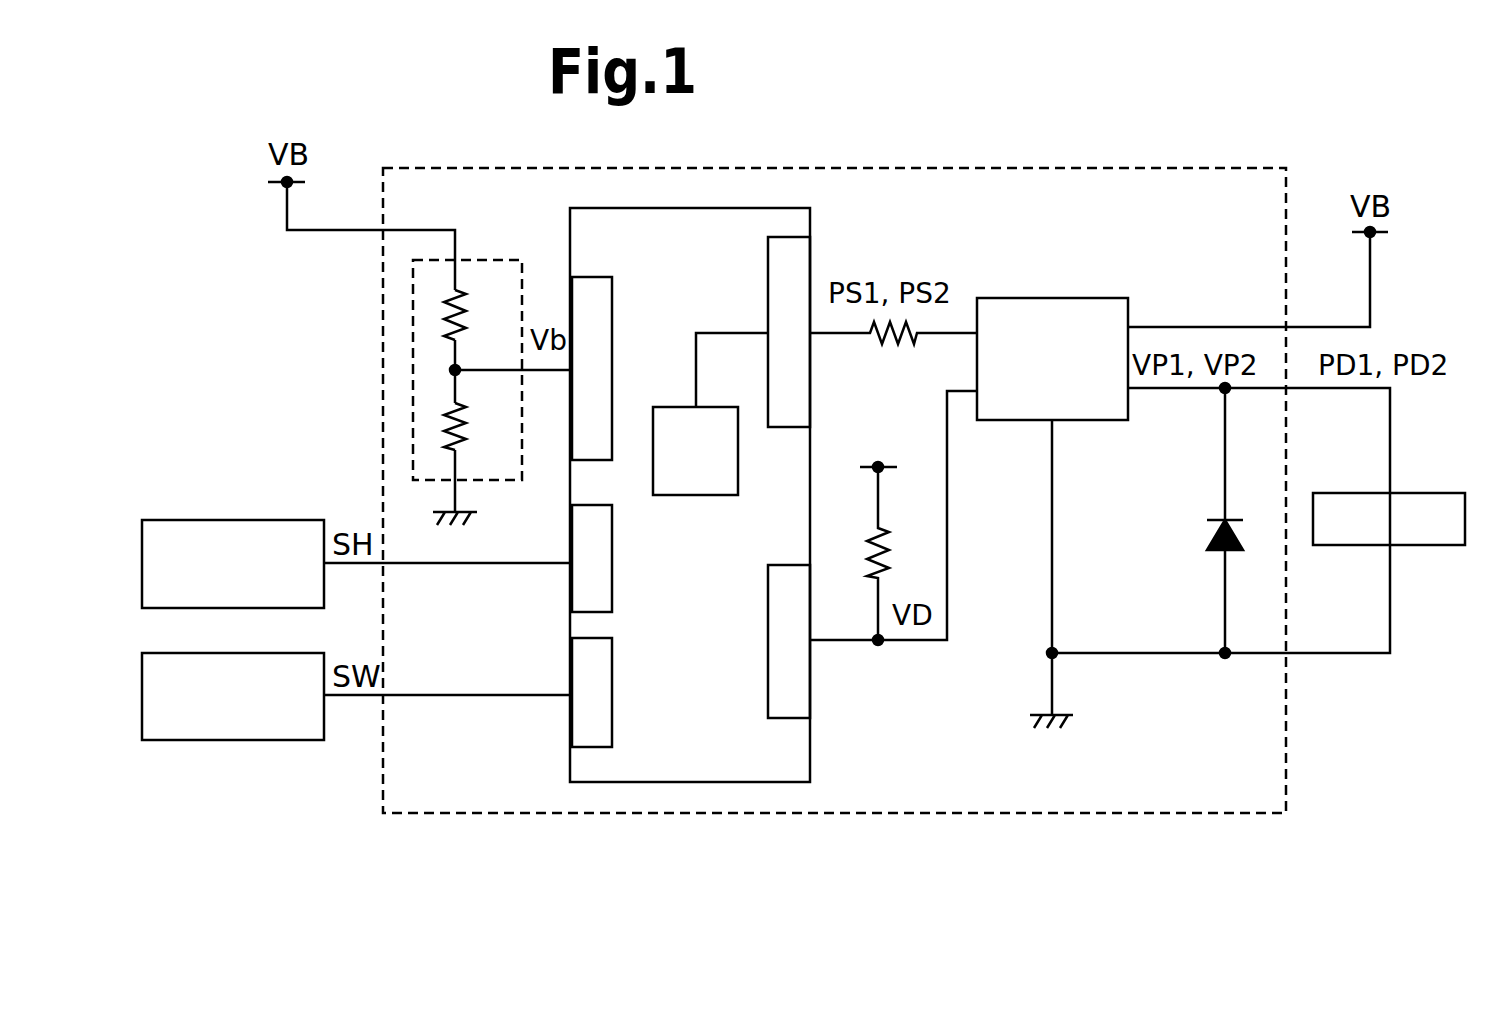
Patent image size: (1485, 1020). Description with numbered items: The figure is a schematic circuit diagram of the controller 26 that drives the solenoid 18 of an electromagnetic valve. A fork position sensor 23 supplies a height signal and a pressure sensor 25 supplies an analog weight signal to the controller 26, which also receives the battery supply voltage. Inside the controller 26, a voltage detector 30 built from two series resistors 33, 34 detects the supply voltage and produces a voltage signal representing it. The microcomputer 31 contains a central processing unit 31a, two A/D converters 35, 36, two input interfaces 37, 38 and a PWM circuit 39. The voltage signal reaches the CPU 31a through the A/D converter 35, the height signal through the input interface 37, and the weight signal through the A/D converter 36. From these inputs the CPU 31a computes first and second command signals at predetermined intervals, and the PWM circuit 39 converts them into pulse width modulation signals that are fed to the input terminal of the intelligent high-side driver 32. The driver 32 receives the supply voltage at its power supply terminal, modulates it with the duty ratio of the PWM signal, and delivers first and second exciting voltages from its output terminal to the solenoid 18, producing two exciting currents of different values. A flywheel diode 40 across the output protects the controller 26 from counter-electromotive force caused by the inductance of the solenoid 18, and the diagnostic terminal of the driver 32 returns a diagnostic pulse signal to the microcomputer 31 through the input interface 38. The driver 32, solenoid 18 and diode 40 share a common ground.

The solenoid 18 is at (1443, 493).
The fork position sensor 23 is at (193, 520).
The pressure sensor 25 is at (193, 653).
The controller 26 is at (1037, 815).
The voltage detector 30 is at (497, 258).
The microcomputer 31 is at (790, 208).
The central processing unit 31a is at (695, 451).
The intelligent high-side driver 32 is at (1050, 298).
The resistor 33 is at (466, 303).
The resistor 34 is at (466, 416).
The A/D converter 35 is at (612, 287).
The A/D converter 36 is at (612, 688).
The input interface 37 is at (613, 573).
The input interface 38 is at (768, 707).
The PWM circuit 39 is at (768, 253).
The flywheel diode 40 is at (1233, 518).